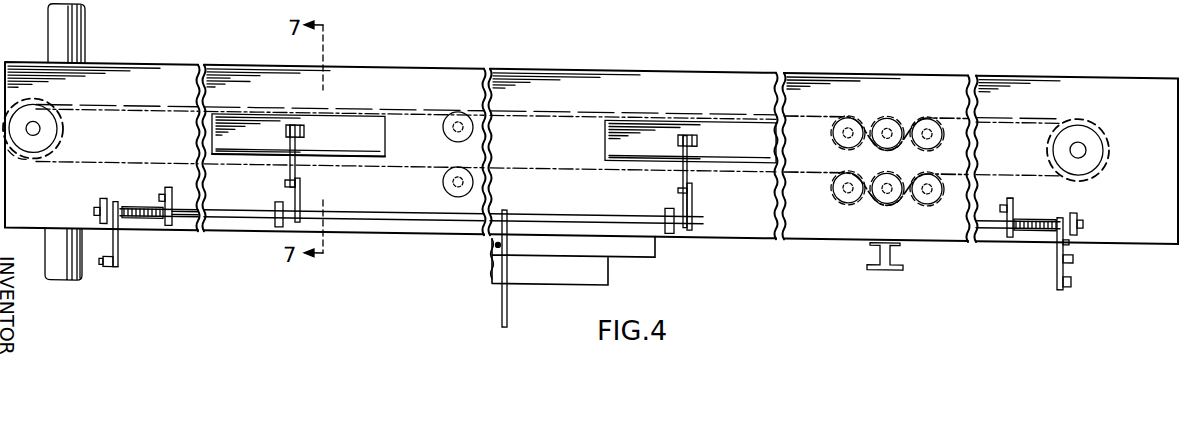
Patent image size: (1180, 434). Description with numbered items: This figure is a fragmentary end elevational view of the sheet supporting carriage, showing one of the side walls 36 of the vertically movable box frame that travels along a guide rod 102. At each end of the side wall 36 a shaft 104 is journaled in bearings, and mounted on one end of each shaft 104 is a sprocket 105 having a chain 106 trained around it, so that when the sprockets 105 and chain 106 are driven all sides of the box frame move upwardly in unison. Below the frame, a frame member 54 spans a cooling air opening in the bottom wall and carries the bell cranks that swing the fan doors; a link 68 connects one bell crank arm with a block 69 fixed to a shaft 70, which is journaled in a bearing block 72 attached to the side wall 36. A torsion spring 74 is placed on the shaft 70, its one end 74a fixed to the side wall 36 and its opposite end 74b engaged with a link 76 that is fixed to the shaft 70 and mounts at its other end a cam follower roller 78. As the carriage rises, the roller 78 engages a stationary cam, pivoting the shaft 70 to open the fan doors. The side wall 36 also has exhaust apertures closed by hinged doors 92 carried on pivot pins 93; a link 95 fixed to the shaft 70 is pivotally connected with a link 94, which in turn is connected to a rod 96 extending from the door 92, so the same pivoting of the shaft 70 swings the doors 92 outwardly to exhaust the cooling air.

The side wall 36 is at (165, 68).
The frame member 54 is at (630, 243).
The link 68 is at (507, 288).
The block 69 is at (510, 205).
The shaft 70 is at (390, 206).
The bearing block 72 is at (275, 204).
The torsion spring 74 is at (172, 220).
The torsion spring end 74a is at (165, 188).
The torsion spring end 74b is at (118, 238).
The link 76 is at (113, 261).
The cam follower roller 78 is at (110, 267).
The hinged door 92 is at (385, 122).
The pivot pin 93 is at (385, 145).
The link 94 is at (300, 174).
The link 95 is at (305, 196).
The rod 96 is at (305, 127).
The guide rod 102 is at (48, 40).
The shaft 104 is at (41, 131).
The sprocket 105 is at (56, 124).
The chain 106 is at (52, 159).